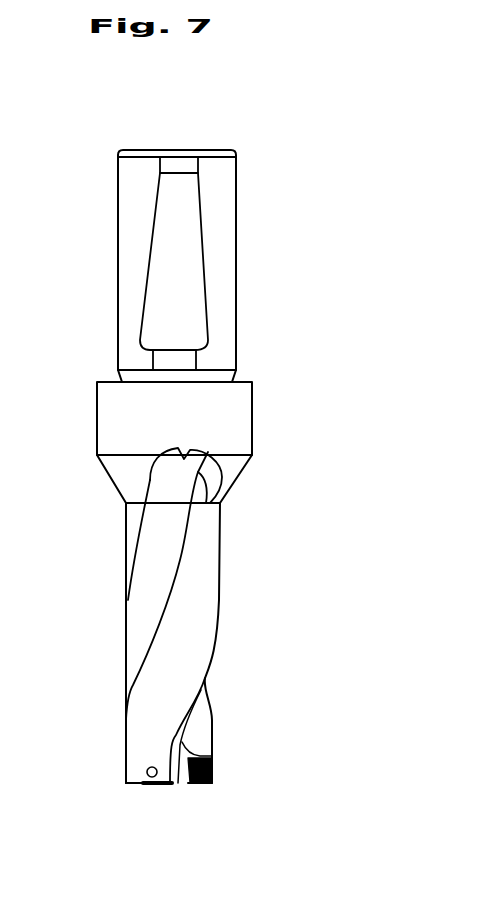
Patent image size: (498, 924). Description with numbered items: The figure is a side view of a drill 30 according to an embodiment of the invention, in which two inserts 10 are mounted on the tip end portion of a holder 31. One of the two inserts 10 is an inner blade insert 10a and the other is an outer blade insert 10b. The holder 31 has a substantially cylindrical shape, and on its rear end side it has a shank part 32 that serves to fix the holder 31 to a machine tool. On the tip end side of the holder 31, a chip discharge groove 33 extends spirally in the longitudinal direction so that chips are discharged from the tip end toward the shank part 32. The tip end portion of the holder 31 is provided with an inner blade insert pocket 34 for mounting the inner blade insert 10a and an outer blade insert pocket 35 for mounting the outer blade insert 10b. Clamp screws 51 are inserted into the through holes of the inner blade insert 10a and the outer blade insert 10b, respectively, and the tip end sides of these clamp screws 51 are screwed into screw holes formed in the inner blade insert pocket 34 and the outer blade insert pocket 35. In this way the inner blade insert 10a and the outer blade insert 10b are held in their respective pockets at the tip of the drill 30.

The drill 30 is at (281, 309).
The holder 31 is at (235, 422).
The shank part 32 is at (85, 150).
The chip discharge groove 33 is at (153, 573).
The inner blade insert pocket 34 is at (141, 786).
The outer blade insert pocket 35 is at (209, 742).
The clamp screw 51 is at (146, 766).
The insert 10 is at (196, 820).
The inner blade insert 10a is at (164, 813).
The outer blade insert 10b is at (208, 787).